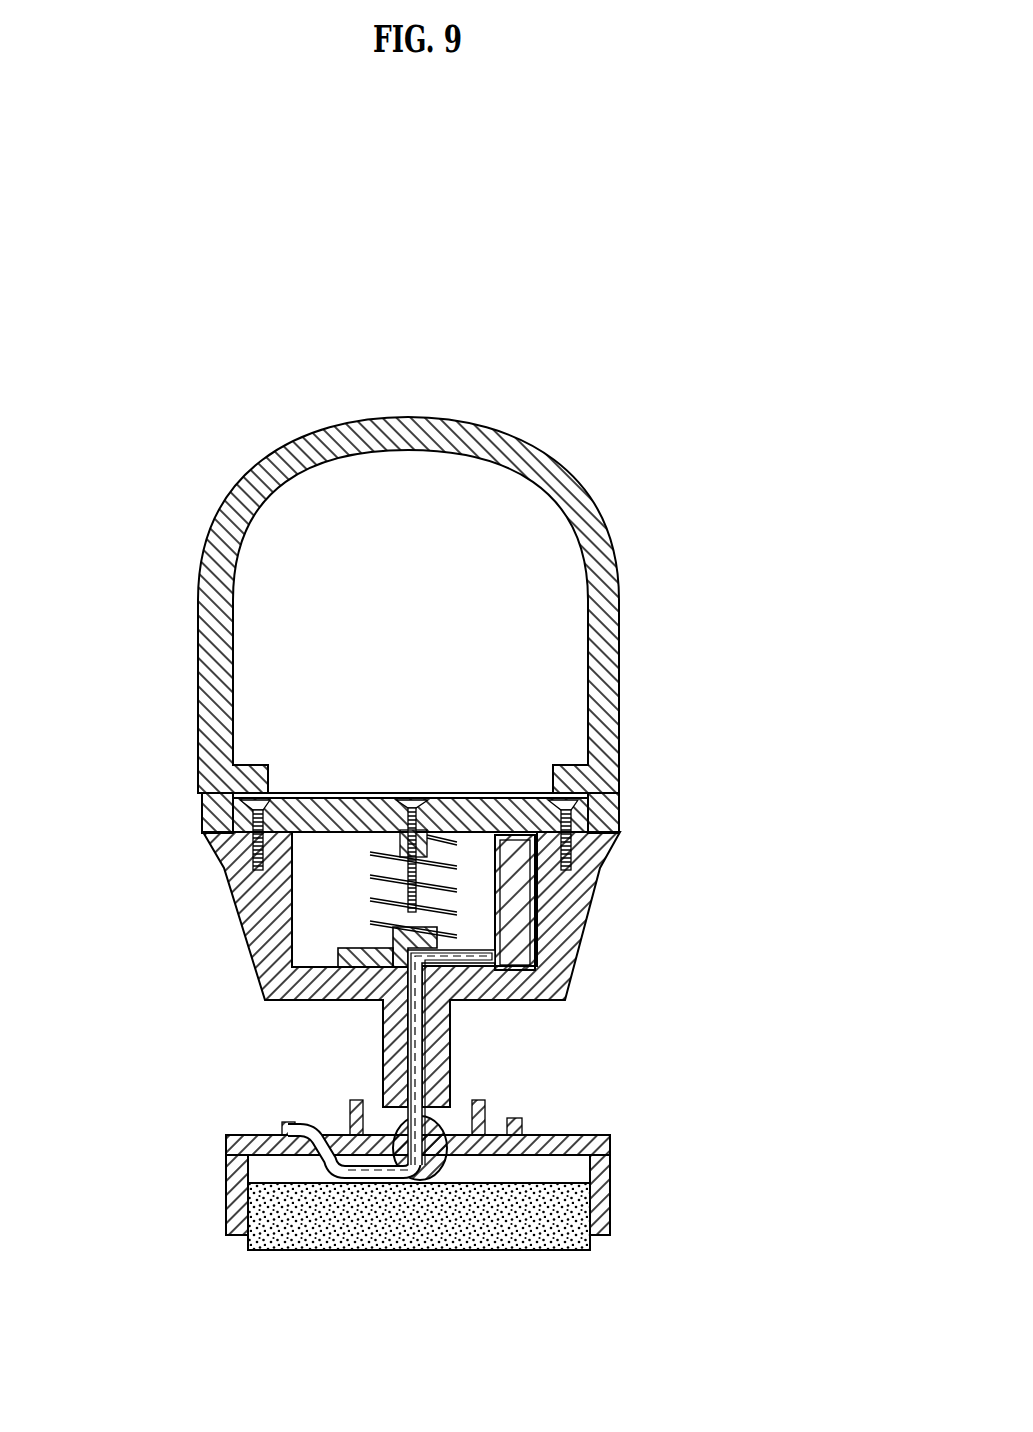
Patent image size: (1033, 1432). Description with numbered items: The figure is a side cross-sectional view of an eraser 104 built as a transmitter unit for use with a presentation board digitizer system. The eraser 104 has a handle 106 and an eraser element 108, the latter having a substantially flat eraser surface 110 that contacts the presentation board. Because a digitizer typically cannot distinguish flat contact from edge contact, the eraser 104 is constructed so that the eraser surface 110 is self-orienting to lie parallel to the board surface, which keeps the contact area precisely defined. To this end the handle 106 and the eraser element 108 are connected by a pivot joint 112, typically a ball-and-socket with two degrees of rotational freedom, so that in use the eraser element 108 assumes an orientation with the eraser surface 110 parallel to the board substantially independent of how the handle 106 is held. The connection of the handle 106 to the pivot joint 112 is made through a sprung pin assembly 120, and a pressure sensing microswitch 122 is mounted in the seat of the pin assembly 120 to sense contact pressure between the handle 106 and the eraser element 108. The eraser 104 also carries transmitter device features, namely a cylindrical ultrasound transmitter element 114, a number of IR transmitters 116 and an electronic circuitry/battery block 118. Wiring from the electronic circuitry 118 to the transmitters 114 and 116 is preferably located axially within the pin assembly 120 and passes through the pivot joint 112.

The eraser 104 is at (733, 298).
The handle 106 is at (483, 440).
The eraser element 108 is at (610, 1158).
The eraser surface 110 is at (388, 1240).
The pivot joint 112 is at (447, 1163).
The cylindrical ultrasound transmitter element 114 is at (482, 1103).
The IR transmitters 116 is at (517, 1120).
The electronic circuitry/battery block 118 is at (517, 905).
The sprung pin assembly 120 is at (393, 945).
The pressure sensing microswitch 122 is at (345, 965).